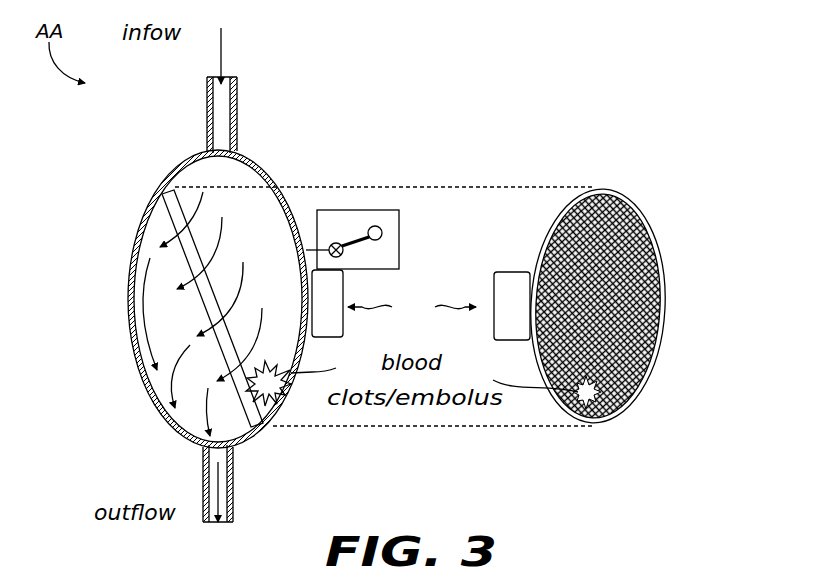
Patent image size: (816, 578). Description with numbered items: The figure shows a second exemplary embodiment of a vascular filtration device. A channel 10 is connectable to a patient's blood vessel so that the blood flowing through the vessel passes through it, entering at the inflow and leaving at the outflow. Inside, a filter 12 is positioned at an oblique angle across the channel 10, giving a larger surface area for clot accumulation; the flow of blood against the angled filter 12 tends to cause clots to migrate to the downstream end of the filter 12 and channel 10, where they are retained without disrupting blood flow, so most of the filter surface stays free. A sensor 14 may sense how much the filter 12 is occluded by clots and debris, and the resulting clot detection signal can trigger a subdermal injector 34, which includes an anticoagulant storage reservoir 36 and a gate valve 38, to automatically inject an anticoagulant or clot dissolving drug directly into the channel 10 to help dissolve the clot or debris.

The channel 10 is at (128, 303).
The filter 12 is at (168, 222).
The sensor 14 is at (439, 306).
The injector 34 is at (378, 239).
The anticoagulant storage reservoir 36 is at (383, 292).
The gate valve 38 is at (342, 303).